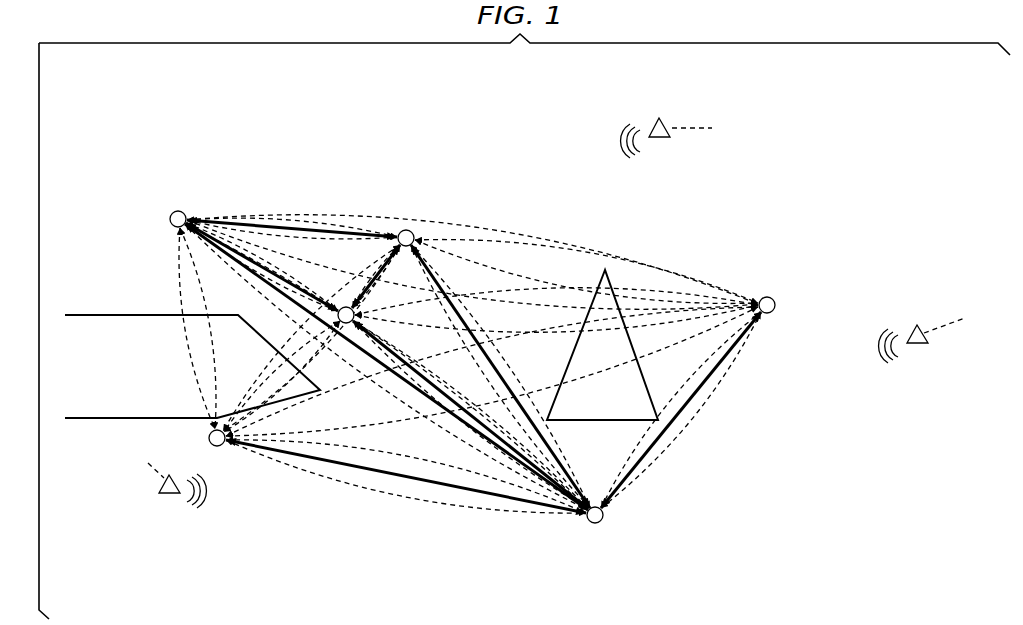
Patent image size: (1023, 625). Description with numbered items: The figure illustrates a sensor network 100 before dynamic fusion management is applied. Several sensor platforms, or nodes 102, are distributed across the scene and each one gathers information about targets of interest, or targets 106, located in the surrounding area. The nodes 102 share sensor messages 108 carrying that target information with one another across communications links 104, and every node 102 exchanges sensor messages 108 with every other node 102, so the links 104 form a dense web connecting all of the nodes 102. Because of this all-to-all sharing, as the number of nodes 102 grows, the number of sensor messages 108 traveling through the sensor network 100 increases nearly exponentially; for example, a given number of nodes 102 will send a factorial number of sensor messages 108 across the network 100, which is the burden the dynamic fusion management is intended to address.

The sensor network 100 is at (468, 88).
The node 102 is at (184, 212).
The communications link 104 is at (288, 225).
The target 106 is at (664, 137).
The sensor message 108 is at (459, 227).